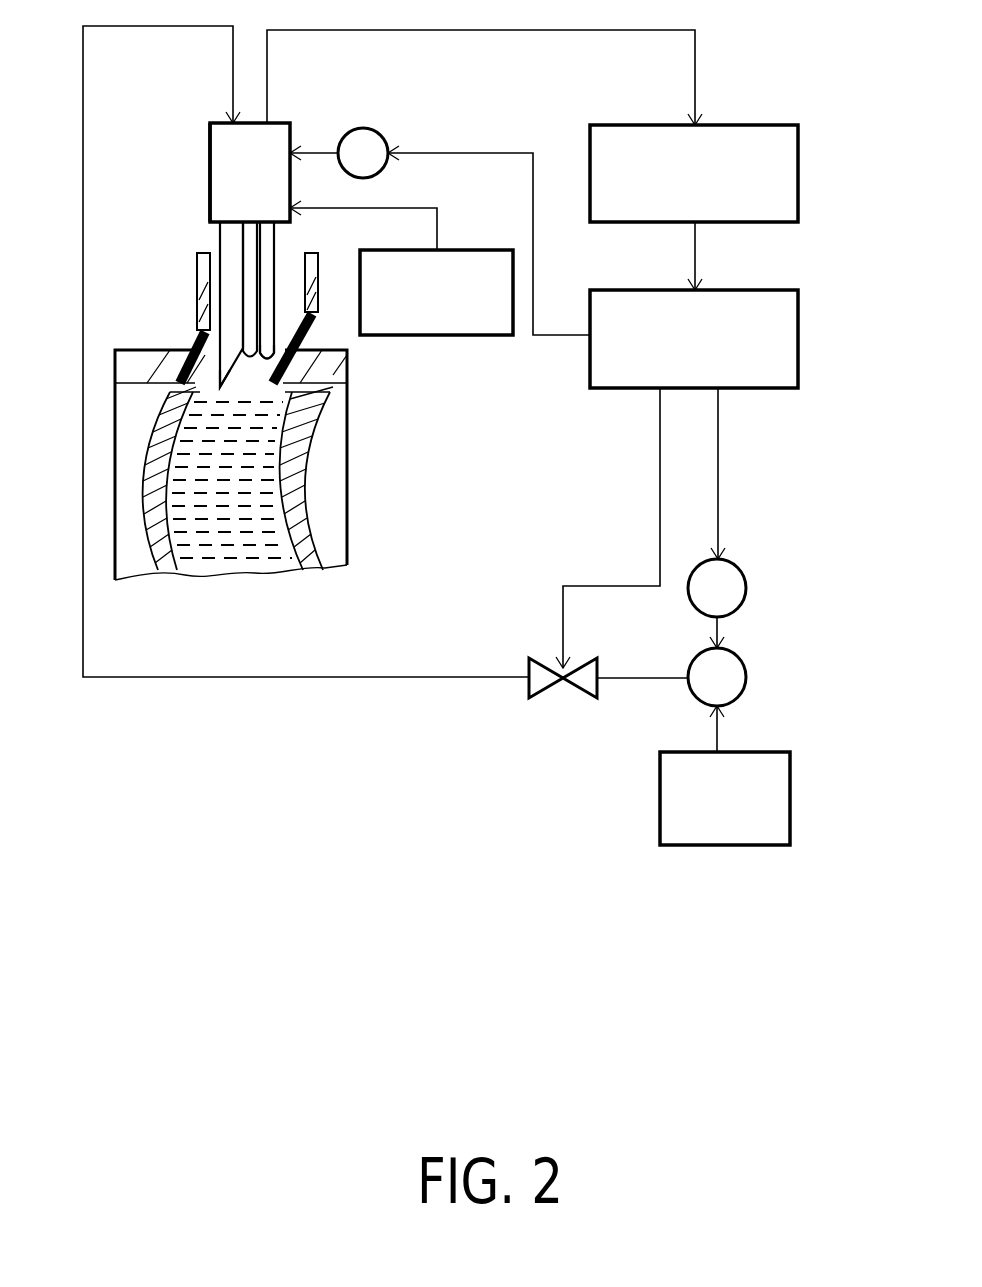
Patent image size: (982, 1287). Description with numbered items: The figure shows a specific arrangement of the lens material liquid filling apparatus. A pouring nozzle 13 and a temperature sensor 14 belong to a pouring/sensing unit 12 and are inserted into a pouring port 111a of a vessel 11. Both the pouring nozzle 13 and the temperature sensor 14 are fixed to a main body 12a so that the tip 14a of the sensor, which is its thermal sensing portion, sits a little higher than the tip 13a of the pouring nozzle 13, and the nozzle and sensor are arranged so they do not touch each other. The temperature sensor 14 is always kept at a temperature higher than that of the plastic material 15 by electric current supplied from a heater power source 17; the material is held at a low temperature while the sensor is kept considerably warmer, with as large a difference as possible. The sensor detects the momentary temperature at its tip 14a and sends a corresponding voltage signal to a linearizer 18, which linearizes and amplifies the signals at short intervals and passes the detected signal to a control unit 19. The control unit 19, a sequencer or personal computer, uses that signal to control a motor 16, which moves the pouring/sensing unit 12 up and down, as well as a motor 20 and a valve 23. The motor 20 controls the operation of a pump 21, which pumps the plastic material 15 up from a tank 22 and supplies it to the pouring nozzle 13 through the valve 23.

The vessel 11 is at (358, 410).
The pouring port 111a is at (200, 290).
The pouring/sensing unit 12 is at (291, 122).
The main body 12a is at (208, 146).
The pouring nozzle 13 is at (217, 242).
The tip of the pouring nozzle 13a is at (213, 367).
The temperature sensor 14 is at (275, 248).
The tip of the temperature sensor 14a is at (273, 352).
The plastic material 15 is at (260, 543).
The motor 16 is at (390, 133).
The heater power source 17 is at (465, 250).
The linearizer 18 is at (728, 125).
The control unit 19 is at (732, 290).
The motor 20 is at (740, 568).
The pump 21 is at (741, 660).
The tank 22 is at (752, 845).
The valve 23 is at (563, 670).